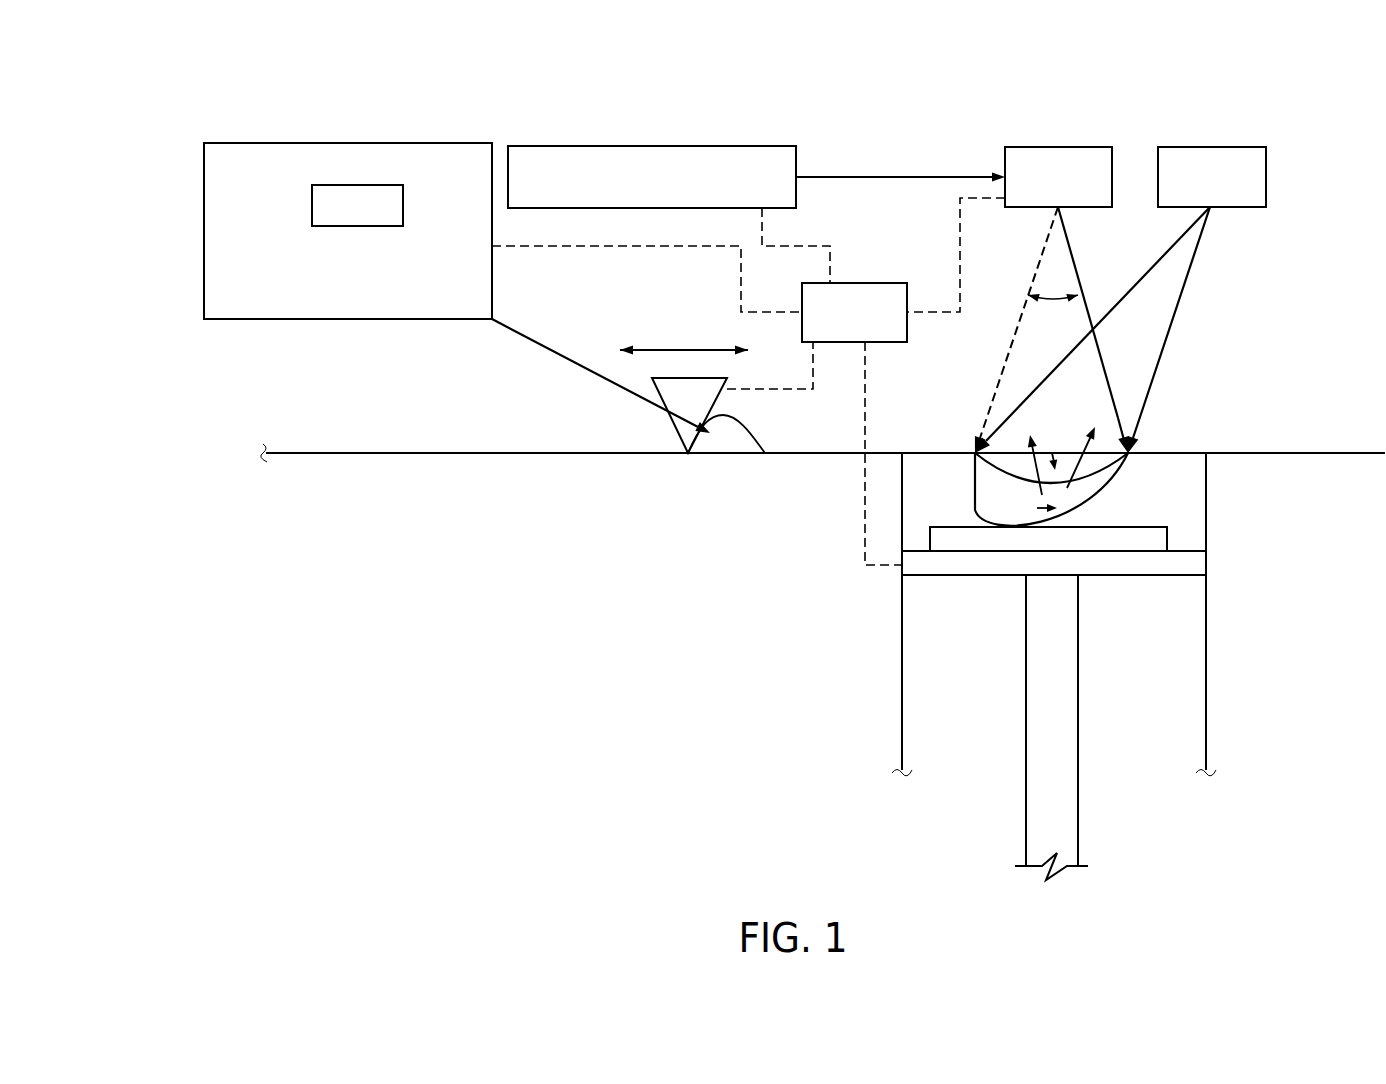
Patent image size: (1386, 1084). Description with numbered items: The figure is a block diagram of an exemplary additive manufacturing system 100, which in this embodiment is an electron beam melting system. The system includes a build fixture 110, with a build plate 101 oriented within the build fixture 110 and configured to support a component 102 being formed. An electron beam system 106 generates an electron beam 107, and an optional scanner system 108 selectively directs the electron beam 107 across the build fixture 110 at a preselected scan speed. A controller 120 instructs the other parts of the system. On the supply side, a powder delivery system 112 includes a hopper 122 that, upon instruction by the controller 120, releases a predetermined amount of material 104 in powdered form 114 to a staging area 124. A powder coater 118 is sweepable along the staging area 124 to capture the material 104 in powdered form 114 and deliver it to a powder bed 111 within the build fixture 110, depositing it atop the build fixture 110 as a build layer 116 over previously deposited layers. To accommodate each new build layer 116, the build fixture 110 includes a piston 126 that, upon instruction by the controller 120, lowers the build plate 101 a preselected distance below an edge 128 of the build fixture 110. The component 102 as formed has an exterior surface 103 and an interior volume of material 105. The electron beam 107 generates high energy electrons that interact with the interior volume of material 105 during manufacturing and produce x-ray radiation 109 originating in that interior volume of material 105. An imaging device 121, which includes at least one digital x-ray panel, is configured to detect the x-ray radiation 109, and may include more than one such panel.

The additive manufacturing system 100 is at (520, 100).
The build plate 101 is at (1157, 540).
The component 102 is at (995, 493).
The exterior surface 103 is at (1058, 480).
The material 104 is at (220, 229).
The interior volume of material 105 is at (1037, 508).
The electron beam system 106 is at (631, 191).
The electron beam 107 is at (893, 170).
The scanner system 108 is at (1037, 191).
The x-ray radiation 109 is at (1110, 470).
The build fixture 110 is at (1210, 798).
The powder bed 111 is at (920, 453).
The powder delivery system 112 is at (288, 356).
The powdered form 114 is at (1193, 483).
The build layer 116 is at (1150, 435).
The powder coater 118 is at (682, 428).
The controller 120 is at (834, 326).
The imaging device 121 is at (1191, 191).
The hopper 122 is at (336, 219).
The staging area 124 is at (455, 430).
The piston 126 is at (1080, 771).
The edge 128 is at (1218, 447).